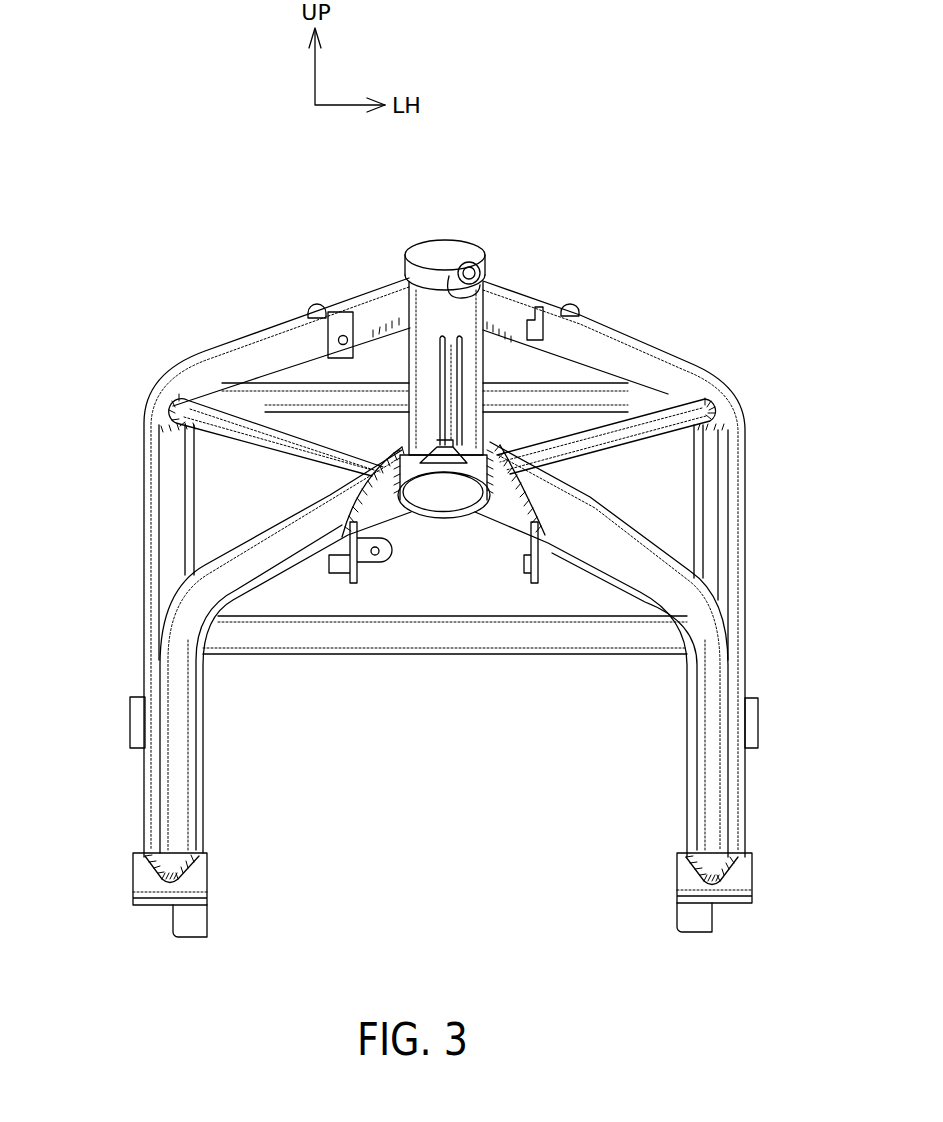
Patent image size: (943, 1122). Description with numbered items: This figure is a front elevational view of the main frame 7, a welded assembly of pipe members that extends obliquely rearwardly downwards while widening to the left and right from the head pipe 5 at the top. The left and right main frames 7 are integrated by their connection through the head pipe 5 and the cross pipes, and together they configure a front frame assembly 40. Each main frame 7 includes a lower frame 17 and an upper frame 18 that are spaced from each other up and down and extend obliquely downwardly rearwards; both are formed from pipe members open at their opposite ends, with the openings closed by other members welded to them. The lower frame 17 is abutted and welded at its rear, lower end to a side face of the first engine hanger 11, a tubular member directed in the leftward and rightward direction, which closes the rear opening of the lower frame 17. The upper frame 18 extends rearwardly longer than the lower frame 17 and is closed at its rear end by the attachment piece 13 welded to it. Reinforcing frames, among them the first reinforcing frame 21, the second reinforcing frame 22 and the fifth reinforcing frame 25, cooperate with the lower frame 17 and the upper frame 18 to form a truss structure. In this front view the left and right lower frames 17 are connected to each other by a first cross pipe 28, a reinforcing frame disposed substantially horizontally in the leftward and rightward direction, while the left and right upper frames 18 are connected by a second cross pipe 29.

The head pipe 5 is at (407, 307).
The main frame 7 is at (148, 397).
The first engine hanger 11 is at (142, 881).
The attachment piece 13 is at (195, 930).
The lower frame 17 is at (284, 575).
The upper frame 18 is at (227, 345).
The first reinforcing frame 21 is at (276, 446).
The second reinforcing frame 22 is at (176, 497).
The fifth reinforcing frame 25 is at (146, 617).
The first cross pipe 28 is at (421, 656).
The second cross pipe 29 is at (308, 388).
The front frame assembly 40 is at (489, 240).